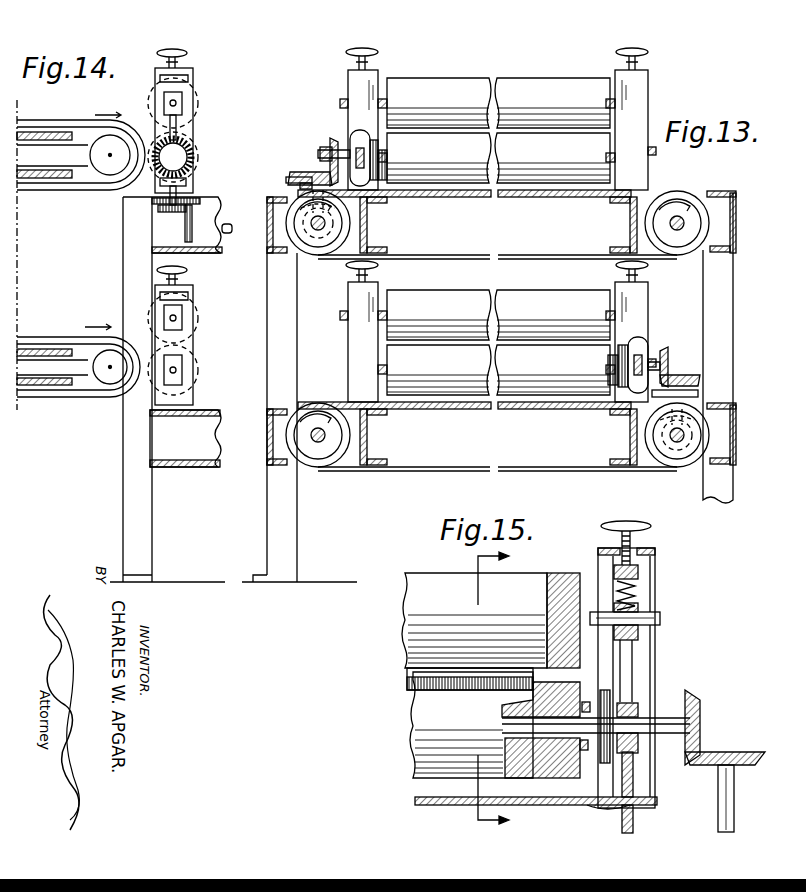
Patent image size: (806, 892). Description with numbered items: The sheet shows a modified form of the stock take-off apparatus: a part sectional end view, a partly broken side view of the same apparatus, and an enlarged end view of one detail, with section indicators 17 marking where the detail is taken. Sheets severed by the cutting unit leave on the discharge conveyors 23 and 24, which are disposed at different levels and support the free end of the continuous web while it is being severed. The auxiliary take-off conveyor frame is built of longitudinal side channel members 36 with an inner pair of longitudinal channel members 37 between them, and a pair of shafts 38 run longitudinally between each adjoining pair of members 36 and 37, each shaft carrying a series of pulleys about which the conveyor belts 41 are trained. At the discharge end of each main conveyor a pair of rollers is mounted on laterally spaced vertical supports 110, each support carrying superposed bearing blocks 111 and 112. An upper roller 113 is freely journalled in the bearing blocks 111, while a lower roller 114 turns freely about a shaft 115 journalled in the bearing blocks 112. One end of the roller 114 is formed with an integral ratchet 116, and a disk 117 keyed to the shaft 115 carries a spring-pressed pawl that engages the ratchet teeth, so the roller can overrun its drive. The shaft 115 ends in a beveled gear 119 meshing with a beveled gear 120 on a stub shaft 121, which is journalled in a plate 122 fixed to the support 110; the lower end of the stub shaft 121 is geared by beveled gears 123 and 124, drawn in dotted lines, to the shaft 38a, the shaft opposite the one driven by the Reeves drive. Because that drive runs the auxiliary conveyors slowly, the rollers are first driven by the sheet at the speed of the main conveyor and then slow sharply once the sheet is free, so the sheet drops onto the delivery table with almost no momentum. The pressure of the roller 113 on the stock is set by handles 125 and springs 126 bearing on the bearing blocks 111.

In FIG. 15, the section line 17 is at (502, 693).
In FIG. 14, the discharge conveyor 23 is at (40, 185).
In FIG. 14, the discharge conveyor 24 is at (42, 342).
In FIG. 13, the longitudinal side channel member 36 is at (736, 215).
In FIG. 13, the longitudinal channel member 37 is at (368, 222).
In FIG. 13, the shaft 38 is at (680, 220).
In FIG. 14, the shaft 38a is at (228, 230).
In FIG. 13, the shaft 38a is at (686, 434).
In FIG. 13, the belt 41 is at (528, 246).
In FIG. 14, the vertical support 110 is at (160, 92).
In FIG. 13, the vertical support 110 is at (360, 82).
In FIG. 15, the vertical support 110 is at (656, 560).
In FIG. 15, the bearing block 111 is at (640, 620).
In FIG. 13, the bearing block 112 is at (362, 150).
In FIG. 15, the bearing block 112 is at (648, 710).
In FIG. 14, the upper roller 113 is at (197, 112).
In FIG. 13, the upper roller 113 is at (546, 78).
In FIG. 15, the upper roller 113 is at (415, 610).
In FIG. 14, the lower roller 114 is at (196, 160).
In FIG. 13, the lower roller 114 is at (545, 193).
In FIG. 15, the lower roller 114 is at (415, 718).
In FIG. 13, the shaft 115 is at (657, 153).
In FIG. 15, the shaft 115 is at (527, 728).
In FIG. 15, the ratchet 116 is at (536, 807).
In FIG. 15, the disk 117 is at (634, 702).
In FIG. 14, the beveled gear 119 is at (150, 168).
In FIG. 13, the beveled gear 119 is at (330, 145).
In FIG. 15, the beveled gear 119 is at (700, 712).
In FIG. 13, the beveled gear 120 is at (302, 179).
In FIG. 15, the beveled gear 120 is at (734, 753).
In FIG. 13, the stub shaft 121 is at (300, 179).
In FIG. 15, the stub shaft 121 is at (722, 808).
In FIG. 13, the plate 122 is at (306, 187).
In FIG. 13, the beveled gear 123 is at (303, 220).
In FIG. 13, the beveled gear 124 is at (318, 228).
In FIG. 14, the handle 125 is at (188, 54).
In FIG. 13, the handle 125 is at (380, 54).
In FIG. 15, the handle 125 is at (630, 522).
In FIG. 15, the spring 126 is at (616, 582).